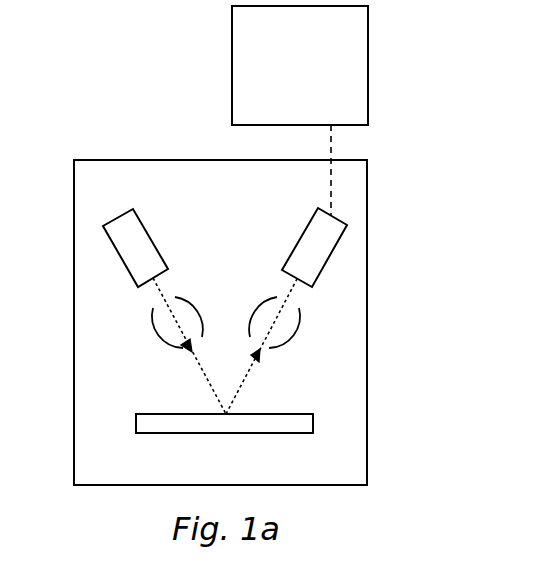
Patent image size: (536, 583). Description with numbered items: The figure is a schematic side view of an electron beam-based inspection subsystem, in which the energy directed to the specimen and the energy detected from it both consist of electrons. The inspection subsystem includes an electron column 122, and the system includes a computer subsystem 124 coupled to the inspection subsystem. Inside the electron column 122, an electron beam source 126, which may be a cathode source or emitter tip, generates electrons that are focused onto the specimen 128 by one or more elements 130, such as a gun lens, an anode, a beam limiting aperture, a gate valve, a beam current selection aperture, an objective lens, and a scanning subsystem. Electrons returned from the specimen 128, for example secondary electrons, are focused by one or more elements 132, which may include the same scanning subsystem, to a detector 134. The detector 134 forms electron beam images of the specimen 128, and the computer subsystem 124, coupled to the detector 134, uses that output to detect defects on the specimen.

The electron column 122 is at (253, 322).
The computer subsystem 124 is at (319, 104).
The electron beam source 126 is at (155, 240).
The specimen 128 is at (241, 408).
The one or more elements 130 is at (163, 346).
The one or more elements 132 is at (293, 346).
The detector 134 is at (295, 240).